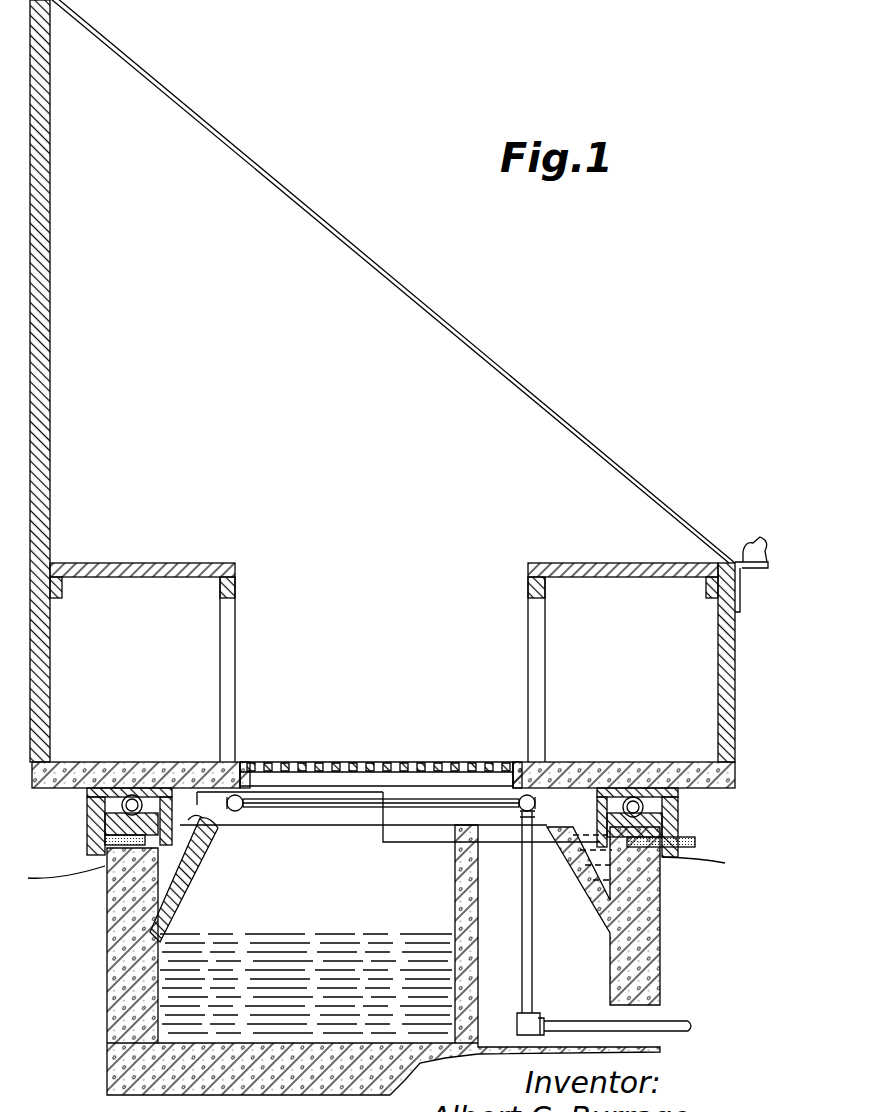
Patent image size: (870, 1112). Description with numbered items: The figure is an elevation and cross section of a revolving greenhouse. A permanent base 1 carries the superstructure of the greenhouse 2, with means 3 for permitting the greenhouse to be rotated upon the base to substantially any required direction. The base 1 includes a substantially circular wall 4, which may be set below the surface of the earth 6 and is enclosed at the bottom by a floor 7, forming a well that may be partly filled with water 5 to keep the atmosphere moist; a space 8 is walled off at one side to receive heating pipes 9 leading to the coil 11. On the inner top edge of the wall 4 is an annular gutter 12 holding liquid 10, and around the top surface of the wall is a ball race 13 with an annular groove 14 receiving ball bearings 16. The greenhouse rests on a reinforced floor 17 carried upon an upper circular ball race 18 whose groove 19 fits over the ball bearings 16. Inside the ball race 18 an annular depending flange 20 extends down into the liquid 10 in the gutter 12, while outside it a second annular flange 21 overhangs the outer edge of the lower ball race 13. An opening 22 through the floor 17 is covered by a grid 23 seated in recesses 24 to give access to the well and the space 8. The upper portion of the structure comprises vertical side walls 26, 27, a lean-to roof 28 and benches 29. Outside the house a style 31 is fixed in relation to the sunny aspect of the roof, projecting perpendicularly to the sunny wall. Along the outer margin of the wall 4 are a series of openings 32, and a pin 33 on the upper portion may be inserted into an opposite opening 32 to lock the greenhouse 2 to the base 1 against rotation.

The permanent base 1 is at (660, 938).
The greenhouse 2 is at (738, 682).
The means for permitting rotation 3 is at (689, 824).
The circular wall 4 is at (120, 978).
The water 5 is at (305, 940).
The earth 6 is at (57, 882).
The floor 7 is at (242, 1080).
The space 8 is at (592, 911).
The heating pipes 9 is at (533, 918).
The liquid 10 is at (217, 825).
The coil 11 is at (348, 810).
The annular gutter 12 is at (193, 858).
The ball race 13 is at (660, 827).
The annular groove 14 is at (87, 847).
The ball bearings 16 is at (142, 795).
The reinforced floor 17 is at (628, 772).
The circular ball race 18 is at (668, 772).
The groove 19 is at (128, 795).
The depending flange 20 is at (578, 795).
The second annular flange 21 is at (675, 795).
The opening 22 is at (262, 780).
The grid 23 is at (398, 766).
The recesses 24 is at (252, 776).
The vertical side wall 26 is at (50, 636).
The vertical side wall 27 is at (718, 622).
The lean-to roof 28 is at (410, 297).
The benches 29 is at (183, 551).
The style 31 is at (753, 553).
The openings 32 is at (655, 865).
The pin 33 is at (690, 848).